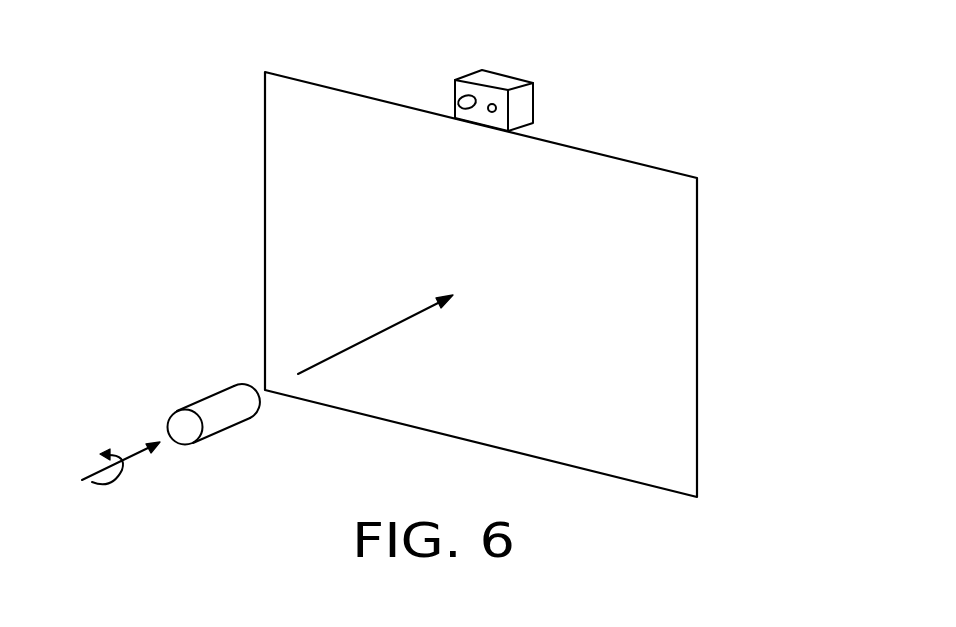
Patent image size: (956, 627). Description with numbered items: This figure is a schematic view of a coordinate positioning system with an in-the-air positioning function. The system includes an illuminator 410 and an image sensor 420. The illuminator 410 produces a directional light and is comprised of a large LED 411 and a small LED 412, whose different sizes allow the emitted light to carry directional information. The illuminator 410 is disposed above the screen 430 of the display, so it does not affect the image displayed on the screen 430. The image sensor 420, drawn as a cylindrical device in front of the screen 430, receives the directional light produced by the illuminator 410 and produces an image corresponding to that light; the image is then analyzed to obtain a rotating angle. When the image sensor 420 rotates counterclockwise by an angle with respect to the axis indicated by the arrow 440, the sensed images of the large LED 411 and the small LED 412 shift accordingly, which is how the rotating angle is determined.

The illuminator 410 is at (455, 82).
The large LED 411 is at (473, 97).
The small LED 412 is at (497, 108).
The image sensor 420 is at (173, 413).
The screen 430 is at (698, 257).
The arrow 440 is at (348, 348).